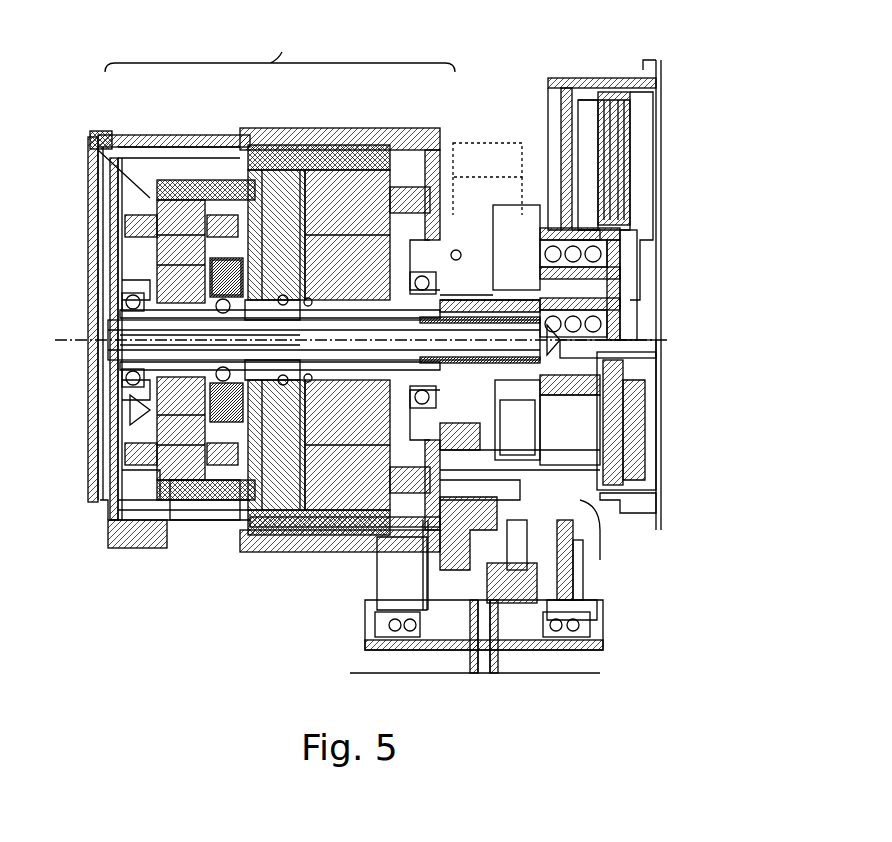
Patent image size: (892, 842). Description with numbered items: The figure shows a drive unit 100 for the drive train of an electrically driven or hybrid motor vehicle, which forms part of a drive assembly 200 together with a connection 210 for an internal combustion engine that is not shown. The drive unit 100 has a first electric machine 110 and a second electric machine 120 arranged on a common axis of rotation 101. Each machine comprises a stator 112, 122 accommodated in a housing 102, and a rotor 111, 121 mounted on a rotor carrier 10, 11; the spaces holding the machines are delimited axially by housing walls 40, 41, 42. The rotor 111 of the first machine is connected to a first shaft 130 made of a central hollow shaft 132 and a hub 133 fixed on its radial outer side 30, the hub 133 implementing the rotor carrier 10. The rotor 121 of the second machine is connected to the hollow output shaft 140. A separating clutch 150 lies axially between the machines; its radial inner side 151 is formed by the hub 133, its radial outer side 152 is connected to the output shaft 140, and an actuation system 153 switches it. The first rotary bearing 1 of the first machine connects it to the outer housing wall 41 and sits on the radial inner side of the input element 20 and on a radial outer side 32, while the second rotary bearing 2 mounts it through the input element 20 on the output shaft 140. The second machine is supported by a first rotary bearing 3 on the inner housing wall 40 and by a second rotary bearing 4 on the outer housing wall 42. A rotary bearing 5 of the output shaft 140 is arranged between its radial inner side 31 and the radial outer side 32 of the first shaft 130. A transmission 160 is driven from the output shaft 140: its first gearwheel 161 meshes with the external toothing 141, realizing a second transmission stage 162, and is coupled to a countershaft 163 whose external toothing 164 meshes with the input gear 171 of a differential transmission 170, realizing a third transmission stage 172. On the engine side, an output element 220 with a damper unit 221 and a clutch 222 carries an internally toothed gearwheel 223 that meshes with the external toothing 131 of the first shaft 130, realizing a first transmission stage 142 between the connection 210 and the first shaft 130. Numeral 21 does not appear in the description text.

The drive unit 100 is at (280, 51).
The first rotary bearing of the first electric machine 1 is at (115, 322).
The second rotary bearing of the first electric machine 2 is at (130, 462).
The first rotary bearing of the second electric machine 3 is at (290, 250).
The second rotary bearing of the second electric machine 4 is at (470, 215).
The rotary bearing of the output shaft 5 is at (490, 335).
The rotor carrier 10 is at (150, 355).
The rotor carrier 11 is at (500, 300).
The input element 20 is at (125, 345).
The magnet 21 is at (215, 270).
The radial outer side 30 is at (135, 398).
The radial inner side 31 is at (438, 290).
The radial outer side 32 is at (260, 480).
The inner housing wall 40 is at (262, 185).
The outer housing wall 41 is at (150, 185).
The outer housing wall 42 is at (435, 280).
The axis of rotation 101 is at (632, 368).
The housing 102 is at (135, 205).
The first electric machine 110 is at (116, 235).
The rotor 111 is at (104, 300).
The stator 112 is at (100, 140).
The second electric machine 120 is at (370, 250).
The rotor 121 is at (405, 230).
The stator 122 is at (330, 240).
The first shaft 130 is at (622, 300).
The external toothing 131 is at (415, 525).
The hollow shaft 132 is at (628, 285).
The hub 133 is at (126, 312).
The output shaft 140 is at (490, 252).
The external toothing 141 is at (470, 415).
The first transmission stage 142 is at (445, 505).
The separating clutch 150 is at (130, 280).
The radial inner side 151 is at (135, 384).
The radial outer side 152 is at (226, 277).
The actuation system 153 is at (200, 505).
The transmission 160 is at (640, 440).
The first gearwheel 161 is at (400, 560).
The second transmission stage 162 is at (517, 427).
The countershaft 163 is at (592, 515).
The external toothing 164 is at (575, 560).
The differential transmission 170 is at (595, 645).
The input gear 171 is at (590, 618).
The third transmission stage 172 is at (578, 570).
The drive assembly 200 is at (663, 64).
The connection 210 is at (640, 240).
The output element 220 is at (600, 90).
The damper unit 221 is at (585, 150).
The clutch 222 is at (622, 120).
The internally toothed gearwheel 223 is at (598, 228).